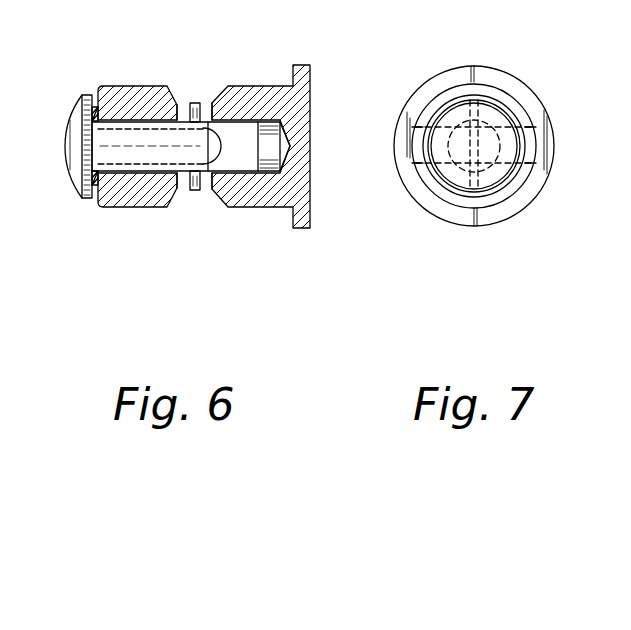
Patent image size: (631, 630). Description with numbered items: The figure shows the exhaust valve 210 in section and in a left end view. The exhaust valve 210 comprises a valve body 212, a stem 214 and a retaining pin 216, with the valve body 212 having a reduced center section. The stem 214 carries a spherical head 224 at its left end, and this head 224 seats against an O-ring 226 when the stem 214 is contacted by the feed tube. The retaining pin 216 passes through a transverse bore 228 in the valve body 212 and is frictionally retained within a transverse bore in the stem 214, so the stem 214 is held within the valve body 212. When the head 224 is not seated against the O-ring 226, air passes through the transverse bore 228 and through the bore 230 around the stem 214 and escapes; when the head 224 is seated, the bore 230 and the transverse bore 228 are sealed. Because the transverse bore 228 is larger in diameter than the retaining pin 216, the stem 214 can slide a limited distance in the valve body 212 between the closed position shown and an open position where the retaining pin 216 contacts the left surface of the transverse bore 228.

In FIG. 6, the exhaust valve 210 is at (263, 51).
In FIG. 7, the exhaust valve 210 is at (403, 95).
In FIG. 6, the valve body 212 is at (262, 190).
In FIG. 7, the valve body 212 is at (523, 183).
In FIG. 6, the stem 214 is at (132, 137).
In FIG. 6, the retaining pin 216 is at (199, 101).
In FIG. 7, the retaining pin 216 is at (480, 107).
In FIG. 6, the spherical head 224 is at (79, 115).
In FIG. 7, the spherical head 224 is at (510, 113).
In FIG. 6, the O-ring 226 is at (96, 184).
In FIG. 6, the transverse bore 228 is at (210, 92).
In FIG. 7, the transverse bore 228 is at (460, 81).
In FIG. 6, the bore 230 is at (152, 170).